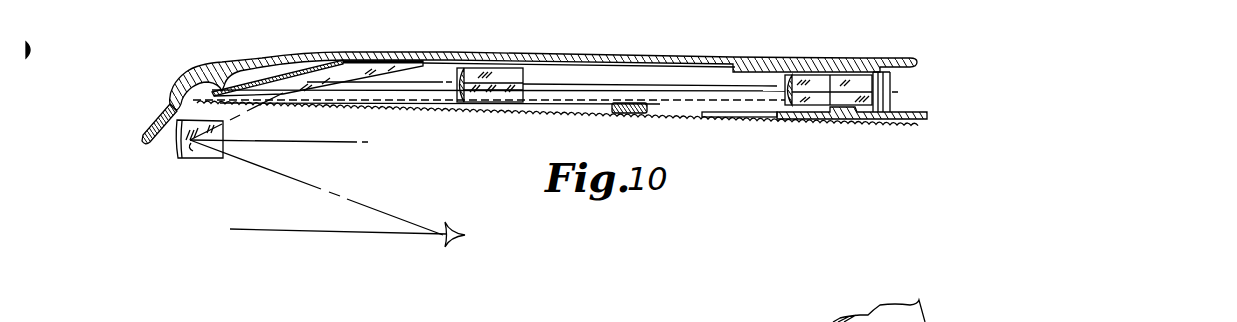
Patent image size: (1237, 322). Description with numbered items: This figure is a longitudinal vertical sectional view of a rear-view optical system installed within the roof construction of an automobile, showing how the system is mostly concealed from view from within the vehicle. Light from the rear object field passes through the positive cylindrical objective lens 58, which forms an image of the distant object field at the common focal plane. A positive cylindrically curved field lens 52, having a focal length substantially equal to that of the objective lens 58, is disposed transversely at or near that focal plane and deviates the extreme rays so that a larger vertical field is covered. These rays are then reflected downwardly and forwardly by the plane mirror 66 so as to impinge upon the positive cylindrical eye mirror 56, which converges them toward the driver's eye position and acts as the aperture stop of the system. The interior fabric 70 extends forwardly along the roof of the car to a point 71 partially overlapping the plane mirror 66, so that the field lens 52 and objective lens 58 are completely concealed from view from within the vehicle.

The field lens 52 is at (500, 74).
The eye mirror 56 is at (197, 158).
The objective lens 58 is at (846, 80).
The plane mirror 66 is at (283, 82).
The interior fabric 70 is at (680, 122).
The point 71 is at (306, 108).